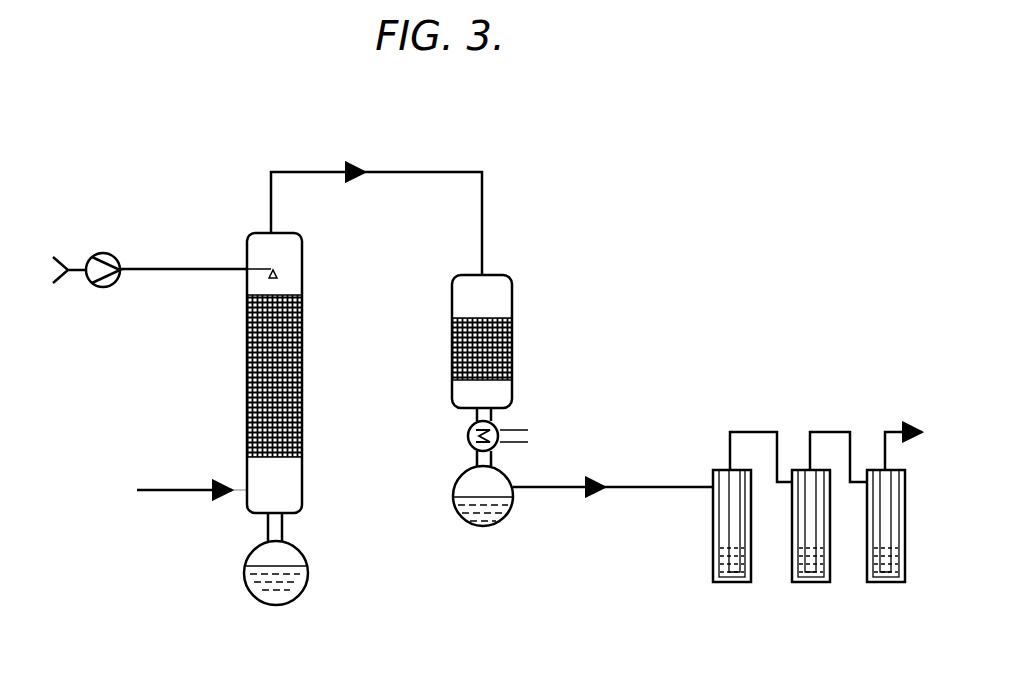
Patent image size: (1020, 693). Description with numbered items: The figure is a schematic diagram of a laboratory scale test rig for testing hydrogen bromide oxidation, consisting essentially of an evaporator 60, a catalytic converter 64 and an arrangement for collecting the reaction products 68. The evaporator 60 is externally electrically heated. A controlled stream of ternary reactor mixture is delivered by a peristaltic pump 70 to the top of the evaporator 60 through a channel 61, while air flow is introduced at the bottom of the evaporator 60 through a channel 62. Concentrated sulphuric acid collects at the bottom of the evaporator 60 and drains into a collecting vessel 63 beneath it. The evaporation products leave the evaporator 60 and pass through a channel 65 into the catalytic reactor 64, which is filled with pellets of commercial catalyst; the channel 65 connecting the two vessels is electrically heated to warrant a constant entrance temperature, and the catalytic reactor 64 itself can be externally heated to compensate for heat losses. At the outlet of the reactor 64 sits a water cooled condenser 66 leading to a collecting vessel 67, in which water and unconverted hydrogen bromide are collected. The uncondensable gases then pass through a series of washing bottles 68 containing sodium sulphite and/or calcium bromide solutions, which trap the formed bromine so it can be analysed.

The evaporator 60 is at (247, 382).
The channel 61 is at (190, 268).
The channel 62 is at (173, 489).
The collecting vessel 63 is at (244, 580).
The catalytic converter 64 is at (512, 326).
The channel 65 is at (418, 170).
The water cooled condenser 66 is at (467, 437).
The collecting vessel 67 is at (455, 502).
The washing bottles 68 is at (880, 583).
The peristaltic pump 70 is at (92, 257).